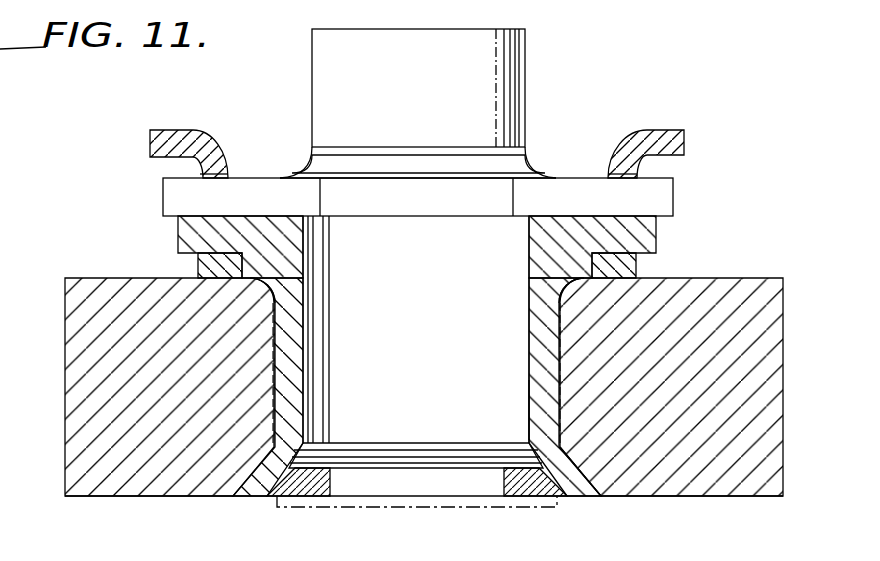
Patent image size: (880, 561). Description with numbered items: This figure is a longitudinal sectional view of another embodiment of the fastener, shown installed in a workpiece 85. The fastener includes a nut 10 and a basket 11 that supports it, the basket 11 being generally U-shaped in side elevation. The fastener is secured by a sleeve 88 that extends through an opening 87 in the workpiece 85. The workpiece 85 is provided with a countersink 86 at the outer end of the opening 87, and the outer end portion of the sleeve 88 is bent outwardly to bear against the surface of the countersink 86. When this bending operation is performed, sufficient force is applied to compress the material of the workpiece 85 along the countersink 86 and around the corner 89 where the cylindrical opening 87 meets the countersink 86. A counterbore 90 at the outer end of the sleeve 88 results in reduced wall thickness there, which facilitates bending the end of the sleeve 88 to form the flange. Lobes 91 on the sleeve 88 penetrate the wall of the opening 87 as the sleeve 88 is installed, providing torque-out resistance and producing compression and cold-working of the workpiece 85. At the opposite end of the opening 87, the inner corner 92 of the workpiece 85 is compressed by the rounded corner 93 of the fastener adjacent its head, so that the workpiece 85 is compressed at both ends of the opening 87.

The nut 10 is at (527, 70).
The basket 11 is at (668, 130).
The workpiece 85 is at (783, 375).
The countersink 86 is at (592, 497).
The opening 87 is at (553, 404).
The sleeve 88 is at (376, 497).
The corner 89 is at (545, 465).
The counterbore 90 is at (551, 478).
The lobes 91 is at (271, 372).
The inner corner 92 is at (574, 286).
The rounded corner 93 is at (263, 289).